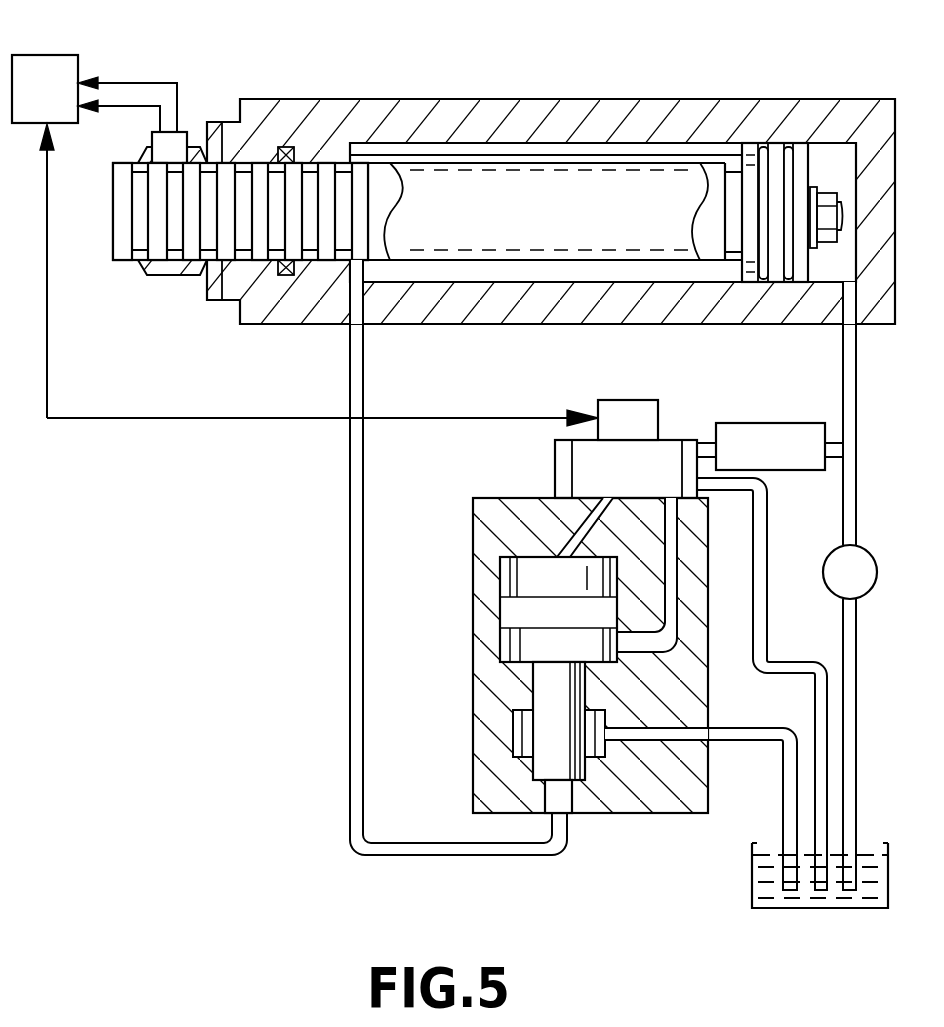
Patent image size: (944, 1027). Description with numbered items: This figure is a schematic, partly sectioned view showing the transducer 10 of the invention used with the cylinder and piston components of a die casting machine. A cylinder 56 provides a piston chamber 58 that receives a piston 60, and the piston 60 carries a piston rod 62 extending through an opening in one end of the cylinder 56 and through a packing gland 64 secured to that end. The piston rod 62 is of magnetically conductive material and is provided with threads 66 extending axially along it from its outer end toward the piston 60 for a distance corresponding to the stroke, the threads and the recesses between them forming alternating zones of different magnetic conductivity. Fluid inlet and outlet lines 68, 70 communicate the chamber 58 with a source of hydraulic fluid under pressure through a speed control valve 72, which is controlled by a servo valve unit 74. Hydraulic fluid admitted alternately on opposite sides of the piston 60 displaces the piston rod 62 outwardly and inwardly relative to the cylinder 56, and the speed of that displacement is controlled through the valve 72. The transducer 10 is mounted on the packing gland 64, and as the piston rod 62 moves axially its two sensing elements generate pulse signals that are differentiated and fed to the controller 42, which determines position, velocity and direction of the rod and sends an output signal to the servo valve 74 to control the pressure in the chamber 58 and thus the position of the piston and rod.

The transducer 10 is at (192, 115).
The controller 42 is at (43, 63).
The cylinder 56 is at (652, 100).
The piston chamber 58 is at (498, 150).
The piston 60 is at (775, 150).
The piston rod 62 is at (553, 262).
The packing gland 64 is at (182, 275).
The threads 66 is at (118, 243).
The fluid inlet and outlet line 68 is at (443, 255).
The fluid inlet and outlet line 70 is at (353, 615).
The speed control valve 72 is at (472, 718).
The servo valve unit 74 is at (625, 407).